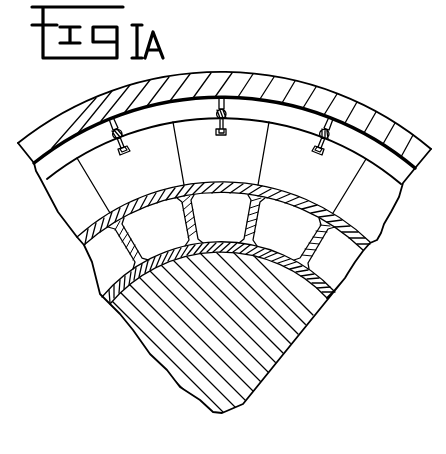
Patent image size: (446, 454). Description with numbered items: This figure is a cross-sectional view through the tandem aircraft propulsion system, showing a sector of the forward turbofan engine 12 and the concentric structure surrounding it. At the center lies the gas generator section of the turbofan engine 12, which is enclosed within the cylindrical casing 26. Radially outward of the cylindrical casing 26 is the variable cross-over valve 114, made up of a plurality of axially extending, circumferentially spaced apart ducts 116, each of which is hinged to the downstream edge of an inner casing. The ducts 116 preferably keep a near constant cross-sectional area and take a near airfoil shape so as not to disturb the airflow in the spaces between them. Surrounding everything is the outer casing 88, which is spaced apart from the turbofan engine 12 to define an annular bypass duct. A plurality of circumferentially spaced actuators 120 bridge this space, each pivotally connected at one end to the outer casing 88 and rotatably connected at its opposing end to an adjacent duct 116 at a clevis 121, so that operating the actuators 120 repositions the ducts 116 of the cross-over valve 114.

The forward turbofan engine 12 is at (310, 340).
The cylindrical casing 26 is at (340, 277).
The outer casing 88 is at (275, 103).
The variable cross-over valve 114 is at (338, 164).
The ducts 116 is at (283, 203).
The actuators 120 is at (124, 137).
The clevis 121 is at (128, 152).